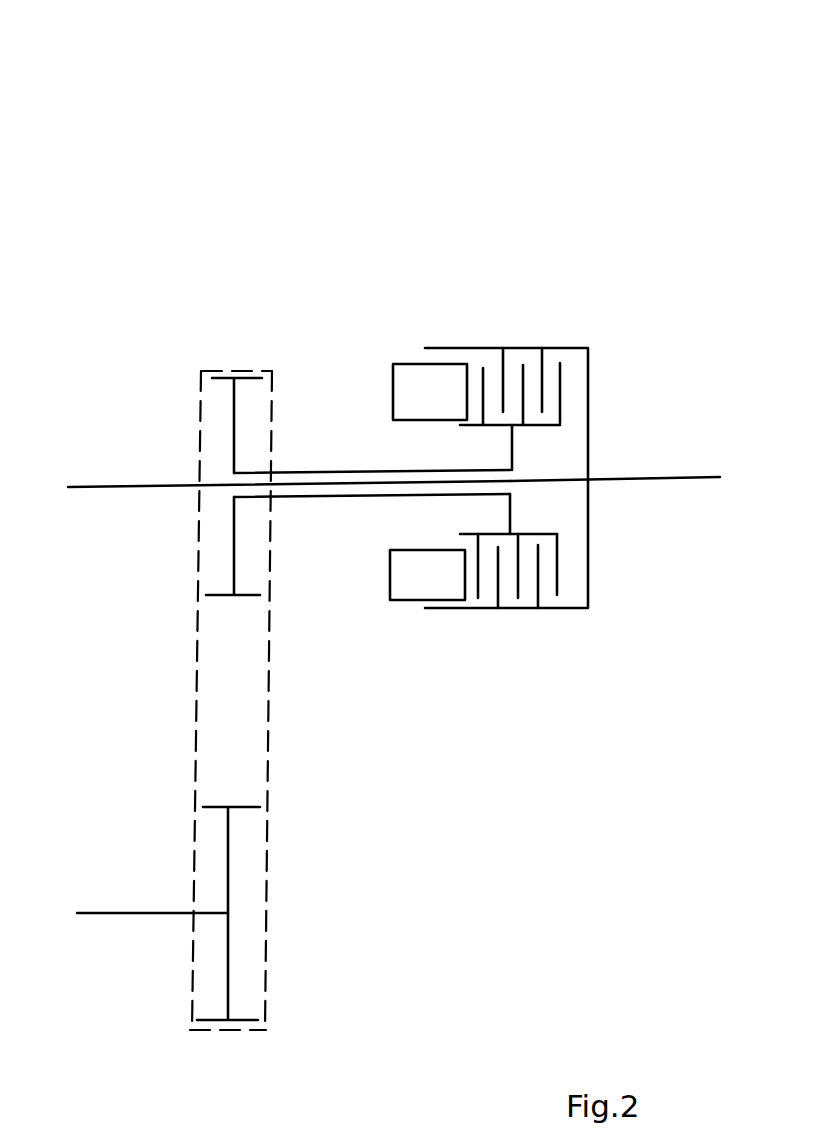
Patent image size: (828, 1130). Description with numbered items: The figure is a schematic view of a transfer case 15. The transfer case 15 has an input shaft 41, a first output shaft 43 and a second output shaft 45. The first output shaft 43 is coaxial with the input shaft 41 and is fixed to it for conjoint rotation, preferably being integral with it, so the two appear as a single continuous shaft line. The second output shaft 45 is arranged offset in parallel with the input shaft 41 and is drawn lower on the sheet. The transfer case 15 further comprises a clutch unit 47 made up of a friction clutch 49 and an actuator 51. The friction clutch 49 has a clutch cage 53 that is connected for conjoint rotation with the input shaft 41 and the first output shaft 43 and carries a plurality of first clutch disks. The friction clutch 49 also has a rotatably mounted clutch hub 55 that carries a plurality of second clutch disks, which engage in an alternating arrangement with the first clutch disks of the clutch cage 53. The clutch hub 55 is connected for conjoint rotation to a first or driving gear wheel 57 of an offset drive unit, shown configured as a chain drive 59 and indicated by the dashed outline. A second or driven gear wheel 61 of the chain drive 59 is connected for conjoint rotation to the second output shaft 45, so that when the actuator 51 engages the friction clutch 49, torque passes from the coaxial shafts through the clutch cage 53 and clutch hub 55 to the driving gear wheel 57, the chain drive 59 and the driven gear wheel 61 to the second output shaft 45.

The transfer case 15 is at (397, 115).
The input shaft 41 is at (72, 482).
The first output shaft 43 is at (705, 470).
The second output shaft 45 is at (107, 907).
The clutch unit 47 is at (460, 316).
The friction clutch 49 is at (530, 350).
The actuator 51 is at (383, 373).
The clutch cage 53 is at (570, 340).
The clutch hub 55 is at (543, 425).
The driving gear wheel 57 is at (233, 400).
The chain drive 59 is at (197, 731).
The driven gear wheel 61 is at (227, 973).